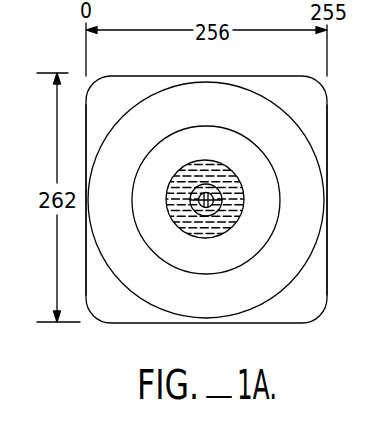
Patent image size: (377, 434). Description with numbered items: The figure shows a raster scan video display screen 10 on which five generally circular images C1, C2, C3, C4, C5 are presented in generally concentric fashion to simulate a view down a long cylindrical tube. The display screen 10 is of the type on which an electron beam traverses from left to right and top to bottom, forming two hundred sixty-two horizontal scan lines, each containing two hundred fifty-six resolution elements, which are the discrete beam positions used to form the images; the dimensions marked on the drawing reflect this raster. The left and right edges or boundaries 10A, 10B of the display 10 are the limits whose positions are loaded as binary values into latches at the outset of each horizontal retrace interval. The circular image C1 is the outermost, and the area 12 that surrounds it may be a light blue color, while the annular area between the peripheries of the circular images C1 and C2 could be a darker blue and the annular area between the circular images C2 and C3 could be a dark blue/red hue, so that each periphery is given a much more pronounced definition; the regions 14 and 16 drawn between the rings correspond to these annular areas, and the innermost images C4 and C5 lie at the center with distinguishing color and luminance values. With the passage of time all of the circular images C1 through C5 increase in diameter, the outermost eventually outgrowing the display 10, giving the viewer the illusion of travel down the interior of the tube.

The display screen 10 is at (338, 52).
The left edge of the display 10A is at (86, 107).
The right edge of the display 10B is at (327, 105).
The area surrounding circular image C1 12 is at (106, 312).
The outer annular region 14 is at (148, 278).
The inner annular region 16 is at (228, 254).
The circular image C1 is at (143, 99).
The circular image C2 is at (197, 126).
The circular image C3 is at (218, 161).
The circular image C4 is at (208, 214).
The circular image C5 is at (200, 214).